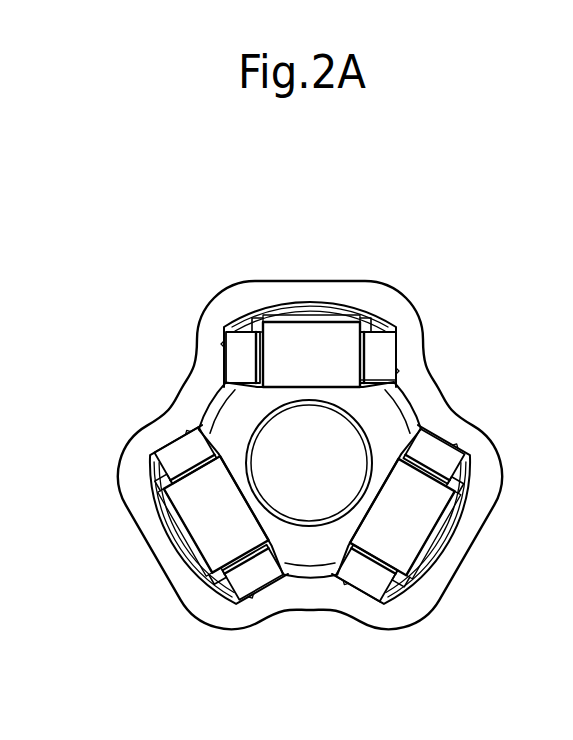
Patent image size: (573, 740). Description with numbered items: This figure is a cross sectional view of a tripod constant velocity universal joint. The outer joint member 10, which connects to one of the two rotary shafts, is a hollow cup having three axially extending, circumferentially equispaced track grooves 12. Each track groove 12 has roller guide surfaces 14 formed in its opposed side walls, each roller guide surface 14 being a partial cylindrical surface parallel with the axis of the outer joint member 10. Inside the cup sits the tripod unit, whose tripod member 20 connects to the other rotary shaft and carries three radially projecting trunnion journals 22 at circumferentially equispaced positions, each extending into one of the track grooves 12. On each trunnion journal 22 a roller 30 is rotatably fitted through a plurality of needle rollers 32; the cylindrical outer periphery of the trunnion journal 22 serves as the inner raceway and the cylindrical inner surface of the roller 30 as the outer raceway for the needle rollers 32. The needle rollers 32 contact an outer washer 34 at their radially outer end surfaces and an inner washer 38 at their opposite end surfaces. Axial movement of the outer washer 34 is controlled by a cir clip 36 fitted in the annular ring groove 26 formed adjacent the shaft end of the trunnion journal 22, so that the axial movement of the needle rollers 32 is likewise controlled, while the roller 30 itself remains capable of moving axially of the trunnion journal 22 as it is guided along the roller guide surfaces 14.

The outer joint member 10 is at (212, 307).
The track groove 12 is at (243, 317).
The roller guide surface 14 is at (222, 345).
The tripod member 20 is at (205, 414).
The trunnion journal 22 is at (320, 343).
The annular ring groove 26 is at (288, 318).
The roller 30 is at (398, 348).
The needle rollers 32 is at (393, 322).
The outer washer 34 is at (373, 322).
The cir clip 36 is at (365, 318).
The inner washer 38 is at (400, 386).